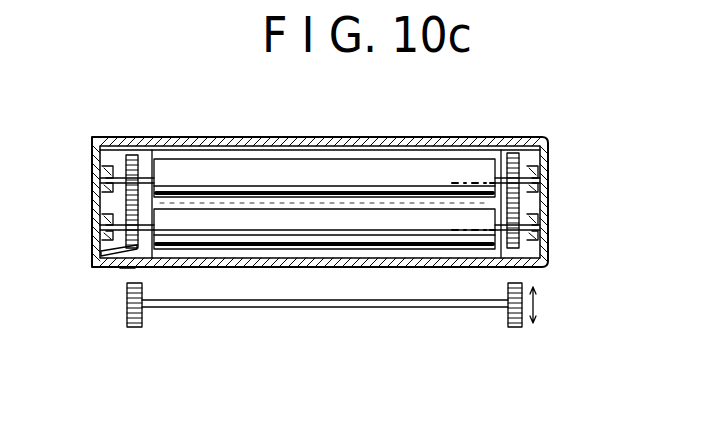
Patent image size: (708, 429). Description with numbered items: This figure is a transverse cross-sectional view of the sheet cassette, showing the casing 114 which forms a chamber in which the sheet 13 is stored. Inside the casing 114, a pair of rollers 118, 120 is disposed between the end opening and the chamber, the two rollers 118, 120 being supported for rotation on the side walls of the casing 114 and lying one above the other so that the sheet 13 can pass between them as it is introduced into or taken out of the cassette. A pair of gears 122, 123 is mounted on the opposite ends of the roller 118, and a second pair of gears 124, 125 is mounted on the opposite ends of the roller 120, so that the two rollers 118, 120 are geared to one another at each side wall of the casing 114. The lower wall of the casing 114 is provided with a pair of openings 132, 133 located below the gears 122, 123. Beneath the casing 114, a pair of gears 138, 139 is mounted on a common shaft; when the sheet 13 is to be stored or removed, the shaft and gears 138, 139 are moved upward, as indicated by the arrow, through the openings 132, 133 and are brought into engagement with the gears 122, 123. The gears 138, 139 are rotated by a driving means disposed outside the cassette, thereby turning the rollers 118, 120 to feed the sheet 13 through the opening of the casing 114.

The sheet 13 is at (418, 200).
The casing 114 is at (540, 196).
The roller 118 is at (348, 235).
The roller 120 is at (334, 178).
The gear 122 is at (547, 250).
The gear 123 is at (106, 251).
The gear 124 is at (515, 155).
The gear 125 is at (138, 155).
The opening 132 is at (520, 266).
The opening 133 is at (125, 268).
The gear 138 is at (508, 328).
The gear 139 is at (137, 328).